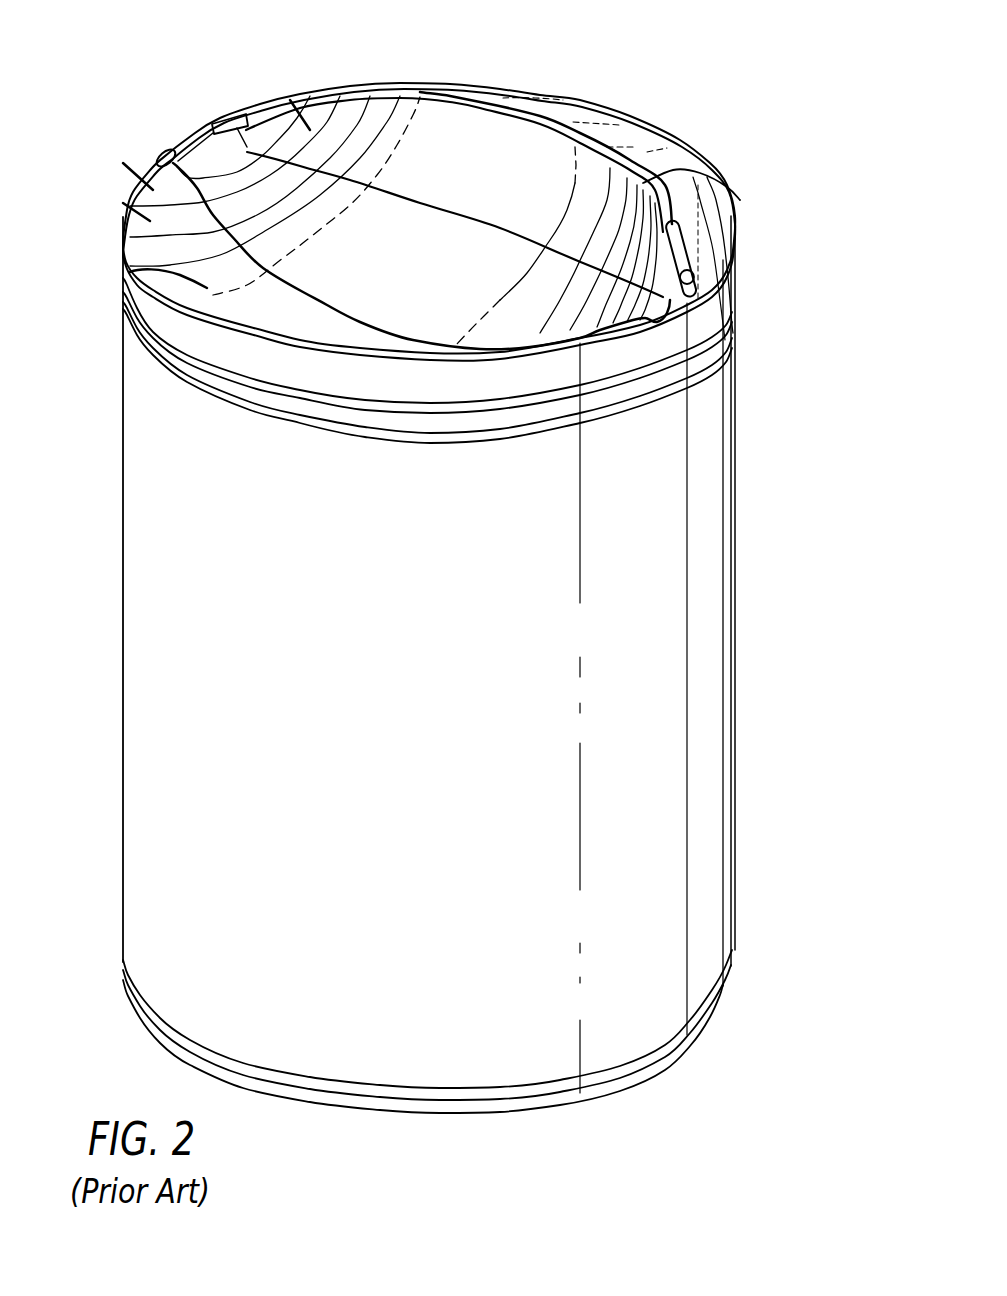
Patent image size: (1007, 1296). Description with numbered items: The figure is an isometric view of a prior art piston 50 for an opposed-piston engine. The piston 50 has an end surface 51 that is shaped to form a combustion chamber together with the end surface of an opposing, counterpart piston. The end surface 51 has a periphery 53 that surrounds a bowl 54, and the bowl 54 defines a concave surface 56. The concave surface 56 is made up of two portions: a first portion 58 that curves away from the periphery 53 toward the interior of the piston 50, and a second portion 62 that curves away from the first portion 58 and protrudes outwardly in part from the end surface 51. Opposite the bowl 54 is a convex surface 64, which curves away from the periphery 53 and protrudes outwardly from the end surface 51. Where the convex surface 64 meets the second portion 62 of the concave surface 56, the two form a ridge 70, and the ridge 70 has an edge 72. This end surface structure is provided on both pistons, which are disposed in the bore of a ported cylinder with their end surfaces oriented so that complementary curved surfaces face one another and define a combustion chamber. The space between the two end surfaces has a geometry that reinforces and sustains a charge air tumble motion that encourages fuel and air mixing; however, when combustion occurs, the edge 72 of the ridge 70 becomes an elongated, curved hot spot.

The piston 50 is at (762, 548).
The end surface 51 is at (196, 78).
The periphery 53 is at (658, 128).
The bowl 54 is at (140, 180).
The concave surface 56 is at (128, 203).
The first portion 58 is at (133, 275).
The second portion 62 is at (290, 100).
The convex surface 64 is at (563, 122).
The ridge 70 is at (740, 200).
The edge 72 is at (460, 90).